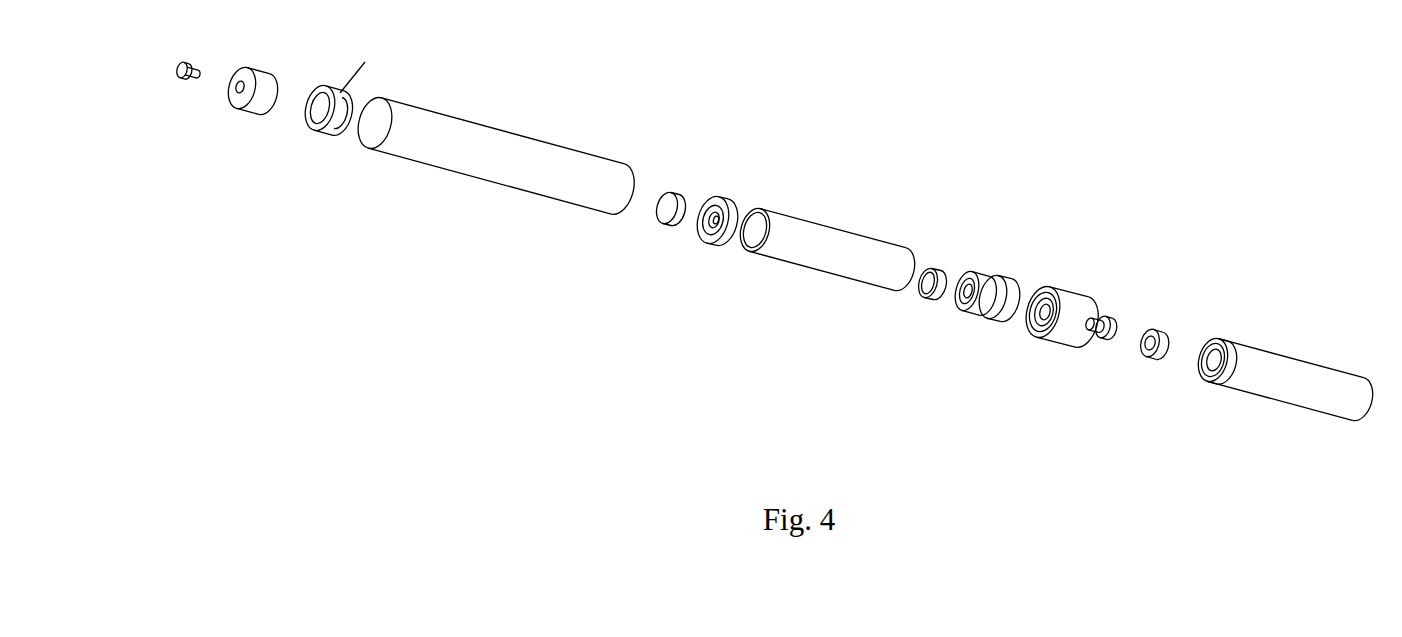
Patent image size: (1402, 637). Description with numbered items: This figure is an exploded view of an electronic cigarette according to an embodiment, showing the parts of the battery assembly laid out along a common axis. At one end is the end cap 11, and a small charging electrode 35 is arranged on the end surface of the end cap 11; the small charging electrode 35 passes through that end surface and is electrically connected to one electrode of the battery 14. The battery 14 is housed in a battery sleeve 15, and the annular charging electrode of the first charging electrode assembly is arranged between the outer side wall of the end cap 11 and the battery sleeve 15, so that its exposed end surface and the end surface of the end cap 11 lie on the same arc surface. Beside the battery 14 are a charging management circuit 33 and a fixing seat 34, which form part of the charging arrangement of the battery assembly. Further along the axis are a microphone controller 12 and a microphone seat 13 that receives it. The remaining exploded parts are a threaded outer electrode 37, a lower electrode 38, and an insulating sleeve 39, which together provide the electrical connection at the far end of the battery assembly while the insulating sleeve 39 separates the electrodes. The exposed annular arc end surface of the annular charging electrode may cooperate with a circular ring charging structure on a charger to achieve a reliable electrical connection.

The end cap 11 is at (263, 98).
The microphone controller 12 is at (940, 268).
The microphone seat 13 is at (992, 318).
The battery 14 is at (850, 252).
The battery sleeve 15 is at (497, 155).
The charging management circuit 33 is at (665, 207).
The fixing seat 34 is at (710, 193).
The small charging electrode 35 is at (178, 77).
The threaded outer electrode 37 is at (1068, 307).
The lower electrode 38 is at (1105, 342).
The insulating sleeve 39 is at (1162, 363).